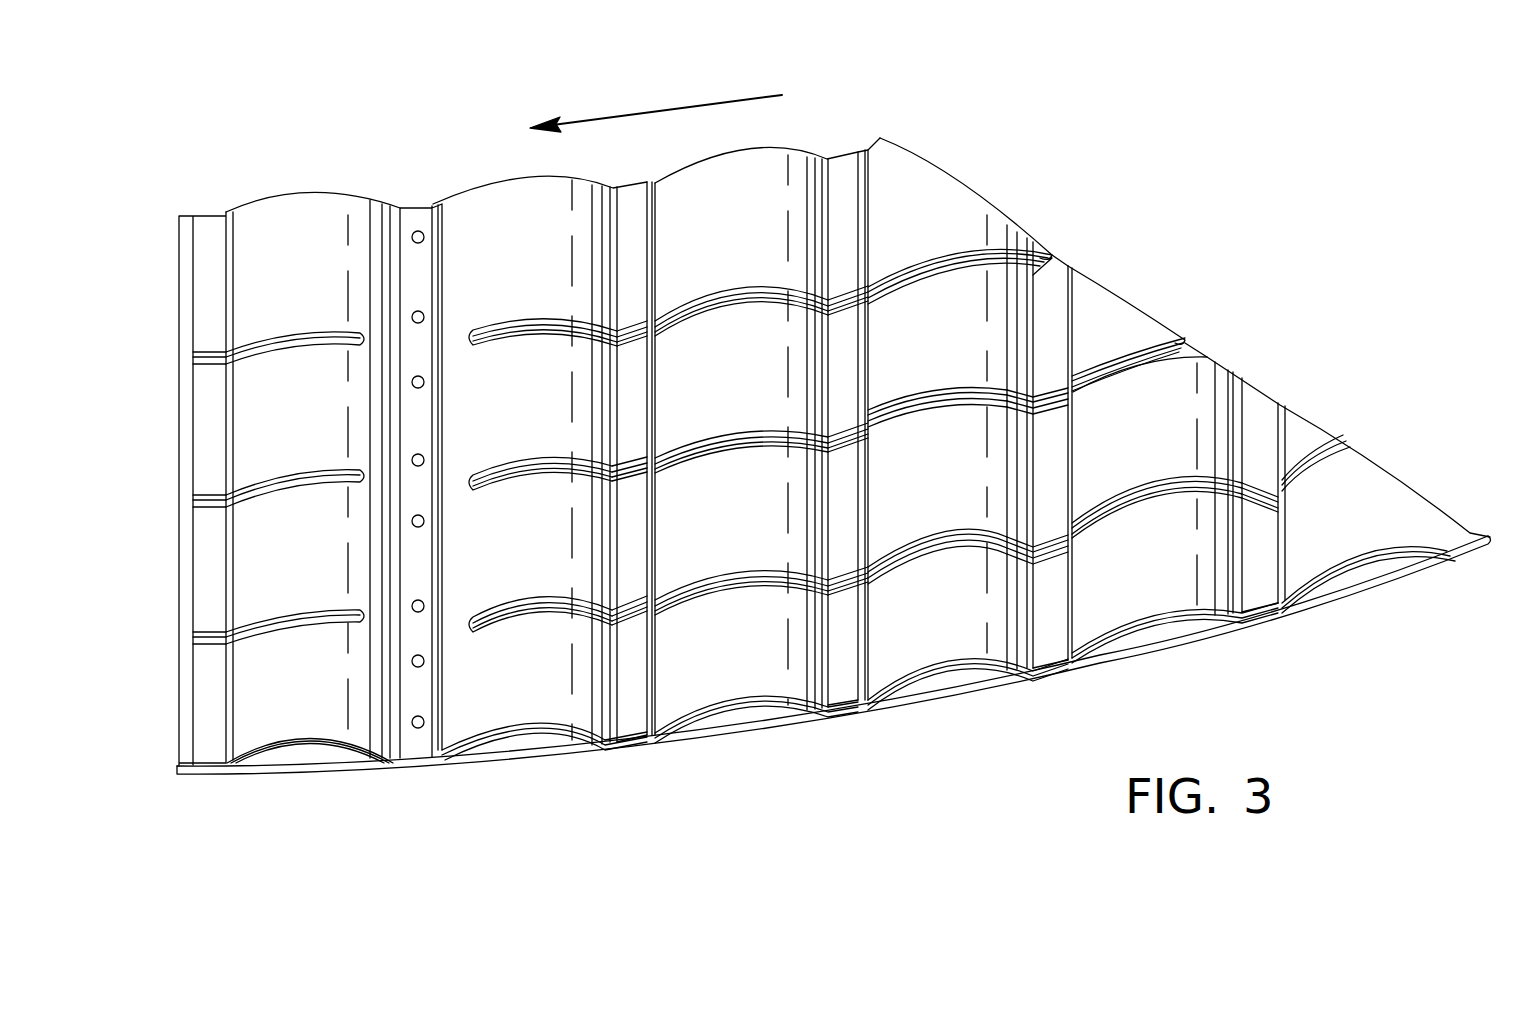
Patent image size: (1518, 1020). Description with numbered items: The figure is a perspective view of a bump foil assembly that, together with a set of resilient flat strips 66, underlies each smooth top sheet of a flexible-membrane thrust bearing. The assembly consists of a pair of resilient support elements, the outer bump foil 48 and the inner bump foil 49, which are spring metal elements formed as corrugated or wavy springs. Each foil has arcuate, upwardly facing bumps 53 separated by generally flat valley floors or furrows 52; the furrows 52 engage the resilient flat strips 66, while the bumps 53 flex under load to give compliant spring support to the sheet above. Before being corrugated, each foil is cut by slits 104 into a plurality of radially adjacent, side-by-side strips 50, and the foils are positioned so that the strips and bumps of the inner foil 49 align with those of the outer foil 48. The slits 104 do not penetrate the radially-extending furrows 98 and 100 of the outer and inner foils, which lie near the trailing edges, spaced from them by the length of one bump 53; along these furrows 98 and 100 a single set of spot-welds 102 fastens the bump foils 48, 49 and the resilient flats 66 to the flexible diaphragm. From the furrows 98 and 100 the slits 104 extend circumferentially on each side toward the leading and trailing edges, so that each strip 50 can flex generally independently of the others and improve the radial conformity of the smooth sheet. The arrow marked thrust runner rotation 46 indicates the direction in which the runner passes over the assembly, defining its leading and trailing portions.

The thrust runner rotation 46 is at (642, 115).
The outer bump foil 48 is at (883, 680).
The inner bump foil 49 is at (930, 677).
The strips 50 is at (958, 188).
The furrows 52 is at (1052, 283).
The bumps 53 is at (273, 285).
The resilient flat strips 66 is at (838, 592).
The radially-extending furrow of outer foil 98 is at (407, 747).
The radially-extending furrow of inner foil 100 is at (438, 762).
The spot-welds 102 is at (418, 231).
The slits 104 is at (727, 433).